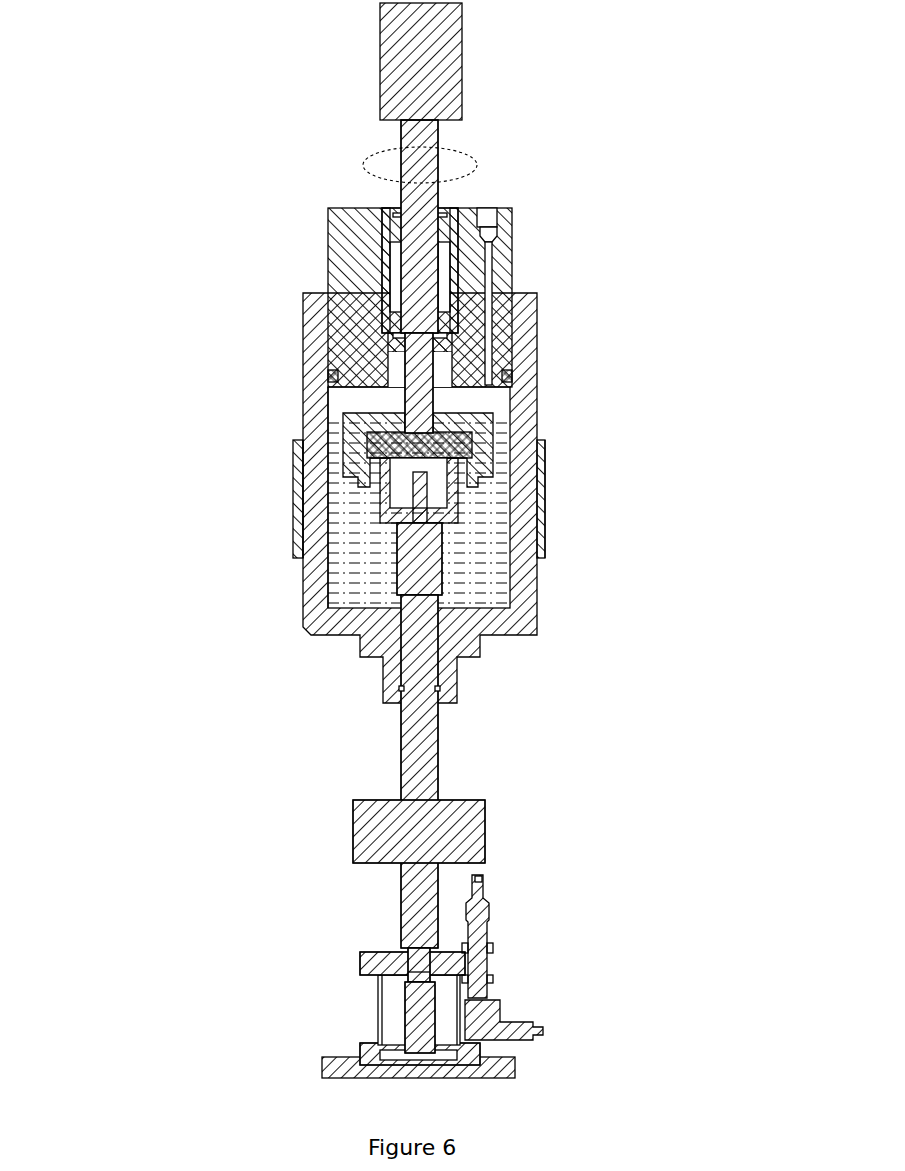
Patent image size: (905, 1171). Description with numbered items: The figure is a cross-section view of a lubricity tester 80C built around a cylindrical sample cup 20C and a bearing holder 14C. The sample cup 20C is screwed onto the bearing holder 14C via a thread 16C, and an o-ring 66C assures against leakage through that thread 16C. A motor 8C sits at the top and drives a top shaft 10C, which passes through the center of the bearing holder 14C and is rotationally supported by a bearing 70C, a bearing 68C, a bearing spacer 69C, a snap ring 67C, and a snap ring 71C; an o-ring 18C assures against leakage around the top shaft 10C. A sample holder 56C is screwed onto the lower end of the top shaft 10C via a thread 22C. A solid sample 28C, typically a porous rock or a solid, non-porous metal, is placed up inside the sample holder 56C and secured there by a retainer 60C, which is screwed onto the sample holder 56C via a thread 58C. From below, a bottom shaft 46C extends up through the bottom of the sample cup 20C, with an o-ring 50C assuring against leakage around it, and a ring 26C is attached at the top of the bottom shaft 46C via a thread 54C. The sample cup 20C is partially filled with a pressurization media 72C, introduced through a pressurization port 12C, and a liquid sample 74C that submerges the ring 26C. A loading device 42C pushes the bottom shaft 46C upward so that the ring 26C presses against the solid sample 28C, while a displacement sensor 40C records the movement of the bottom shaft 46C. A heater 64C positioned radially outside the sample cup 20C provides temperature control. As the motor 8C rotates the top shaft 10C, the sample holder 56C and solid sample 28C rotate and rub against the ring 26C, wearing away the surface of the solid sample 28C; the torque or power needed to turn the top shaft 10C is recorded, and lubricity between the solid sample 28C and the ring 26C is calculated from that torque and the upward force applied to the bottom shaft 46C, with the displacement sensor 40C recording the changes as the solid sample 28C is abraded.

The motor 8C is at (462, 62).
The top shaft 10C is at (442, 143).
The pressurization port 12C is at (500, 205).
The bearing holder 14C is at (512, 252).
The thread 16C is at (537, 300).
The o-ring 18C is at (537, 335).
The cylindrical sample cup 20C is at (475, 433).
The thread 22C is at (543, 447).
The ring 26C is at (545, 530).
The solid sample 28C is at (303, 460).
The displacement sensor 40C is at (495, 973).
The loading device 42C is at (400, 997).
The bottom shaft 46C is at (400, 790).
The o-ring 50C is at (398, 690).
The thread 54C is at (303, 592).
The sample holder 56C is at (345, 418).
The thread 58C is at (545, 452).
The retainer 60C is at (315, 490).
The heater 64C is at (293, 548).
The o-ring 66C is at (328, 375).
The snap ring 67C is at (325, 340).
The bearing 68C is at (330, 298).
The bearing spacer 69C is at (335, 262).
The bearing 70C is at (328, 210).
The snap ring 71C is at (385, 180).
The pressurization media 72C is at (512, 376).
The liquid sample 74C is at (419, 516).
The lubricity tester 80C is at (349, 134).